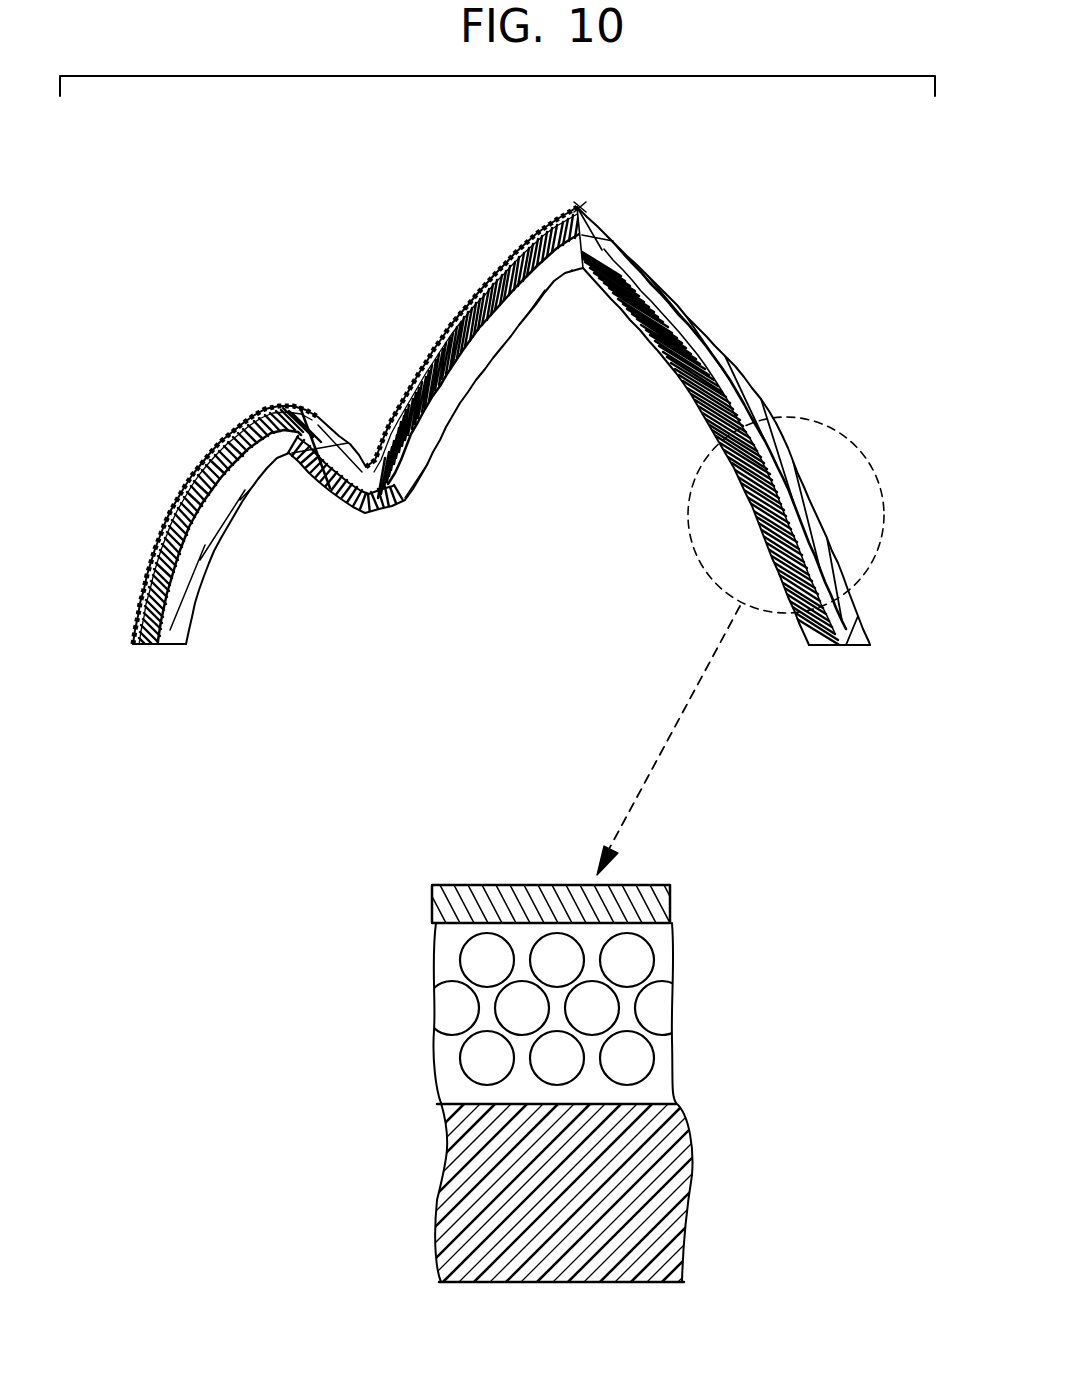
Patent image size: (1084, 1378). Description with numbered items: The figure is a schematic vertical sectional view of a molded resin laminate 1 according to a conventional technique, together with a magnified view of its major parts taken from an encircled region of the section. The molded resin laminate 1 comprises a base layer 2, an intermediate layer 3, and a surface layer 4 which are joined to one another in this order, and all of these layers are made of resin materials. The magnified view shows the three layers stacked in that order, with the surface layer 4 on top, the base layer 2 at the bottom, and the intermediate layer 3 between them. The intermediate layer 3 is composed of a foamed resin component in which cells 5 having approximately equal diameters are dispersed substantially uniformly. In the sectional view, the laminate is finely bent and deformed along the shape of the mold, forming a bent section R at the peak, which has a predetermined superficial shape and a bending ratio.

The molded resin laminate 1 is at (200, 312).
The base layer 2 is at (289, 456).
The intermediate layer 3 is at (746, 380).
The surface layer 4 is at (283, 404).
The cells 5 is at (626, 980).
The bent section R is at (580, 204).